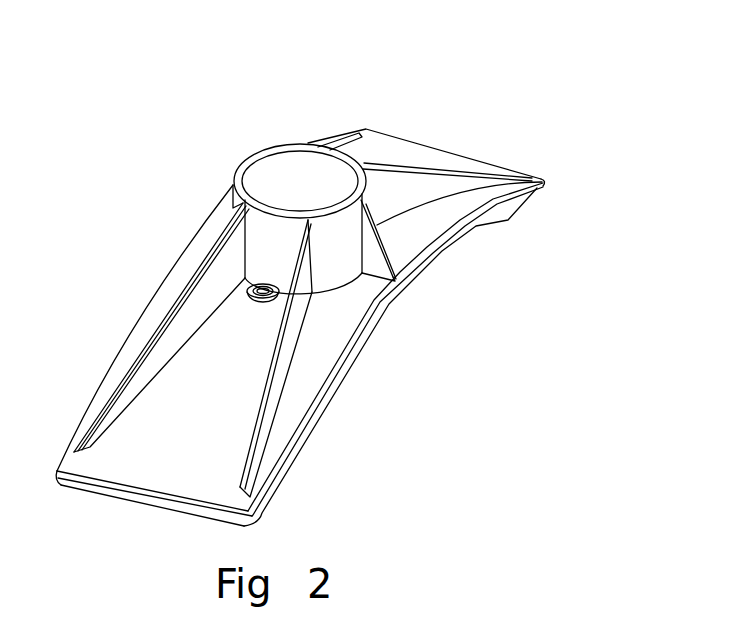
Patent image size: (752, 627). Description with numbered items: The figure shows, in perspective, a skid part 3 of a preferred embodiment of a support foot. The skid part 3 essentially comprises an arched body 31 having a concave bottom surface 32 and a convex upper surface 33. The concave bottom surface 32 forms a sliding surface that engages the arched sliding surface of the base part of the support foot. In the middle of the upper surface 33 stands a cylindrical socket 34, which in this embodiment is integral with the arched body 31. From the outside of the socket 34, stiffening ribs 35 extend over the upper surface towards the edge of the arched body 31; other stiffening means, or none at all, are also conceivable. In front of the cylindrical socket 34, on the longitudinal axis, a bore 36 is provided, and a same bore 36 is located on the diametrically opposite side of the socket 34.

The skid part 3 is at (532, 108).
The arched body 31 is at (430, 225).
The concave bottom surface 32 is at (377, 360).
The convex upper surface 33 is at (179, 393).
The cylindrical socket 34 is at (268, 173).
The stiffening ribs 35 is at (348, 133).
The bore 36 is at (263, 288).